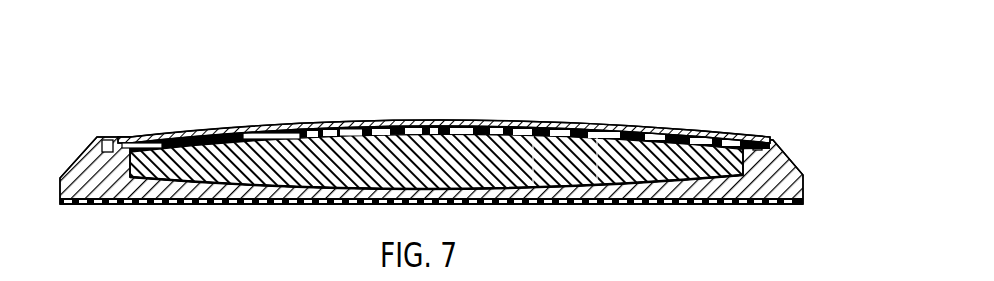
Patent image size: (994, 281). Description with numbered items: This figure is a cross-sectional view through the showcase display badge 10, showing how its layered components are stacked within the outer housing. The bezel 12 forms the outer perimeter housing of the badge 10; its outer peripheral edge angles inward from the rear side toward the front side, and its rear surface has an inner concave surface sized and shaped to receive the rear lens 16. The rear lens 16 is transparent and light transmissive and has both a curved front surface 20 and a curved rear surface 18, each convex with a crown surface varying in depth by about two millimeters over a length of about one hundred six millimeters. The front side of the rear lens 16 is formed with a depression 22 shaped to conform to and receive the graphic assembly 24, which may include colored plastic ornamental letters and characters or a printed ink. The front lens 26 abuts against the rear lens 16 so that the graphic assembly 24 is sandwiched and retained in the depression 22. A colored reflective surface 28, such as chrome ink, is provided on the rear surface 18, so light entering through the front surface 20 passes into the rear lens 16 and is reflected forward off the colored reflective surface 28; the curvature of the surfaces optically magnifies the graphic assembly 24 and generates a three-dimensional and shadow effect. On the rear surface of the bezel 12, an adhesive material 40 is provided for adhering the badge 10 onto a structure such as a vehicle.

The showcase display badge 10 is at (454, 135).
The bezel 12 is at (770, 137).
The rear lens 16 is at (164, 150).
The rear surface 18 is at (637, 203).
The front surface 20 is at (675, 135).
The depression 22 is at (543, 202).
The graphic assembly 24 is at (412, 123).
The front lens 26 is at (230, 135).
The colored reflective surface 28 is at (597, 182).
The adhesive material 40 is at (777, 203).